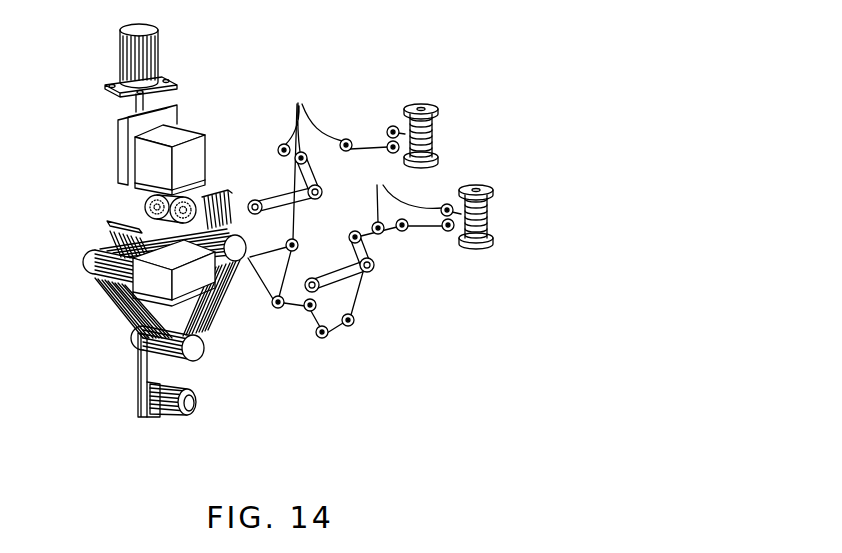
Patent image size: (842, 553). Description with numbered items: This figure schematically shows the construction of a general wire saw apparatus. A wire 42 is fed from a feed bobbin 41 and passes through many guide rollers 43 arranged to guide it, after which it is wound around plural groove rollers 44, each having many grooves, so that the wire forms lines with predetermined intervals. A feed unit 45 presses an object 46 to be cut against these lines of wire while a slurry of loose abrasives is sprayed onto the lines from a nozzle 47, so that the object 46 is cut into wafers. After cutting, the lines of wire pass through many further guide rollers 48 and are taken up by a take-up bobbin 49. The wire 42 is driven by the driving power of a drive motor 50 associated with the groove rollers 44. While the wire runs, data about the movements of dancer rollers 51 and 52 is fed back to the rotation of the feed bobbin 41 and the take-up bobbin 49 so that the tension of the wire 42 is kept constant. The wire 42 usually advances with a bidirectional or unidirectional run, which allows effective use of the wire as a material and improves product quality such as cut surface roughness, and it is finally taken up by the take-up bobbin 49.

The feed bobbin 41 is at (470, 252).
The wire 42 is at (365, 143).
The guide rollers 43 is at (409, 196).
The groove rollers 44 is at (209, 362).
The feed unit 45 is at (180, 106).
The object to be cut 46 is at (136, 199).
The nozzle 47 is at (107, 233).
The guide rollers 48 is at (335, 208).
The take-up bobbin 49 is at (430, 102).
The drive motor 50 is at (134, 397).
The dancer roller 51 is at (361, 284).
The dancer roller 52 is at (273, 184).